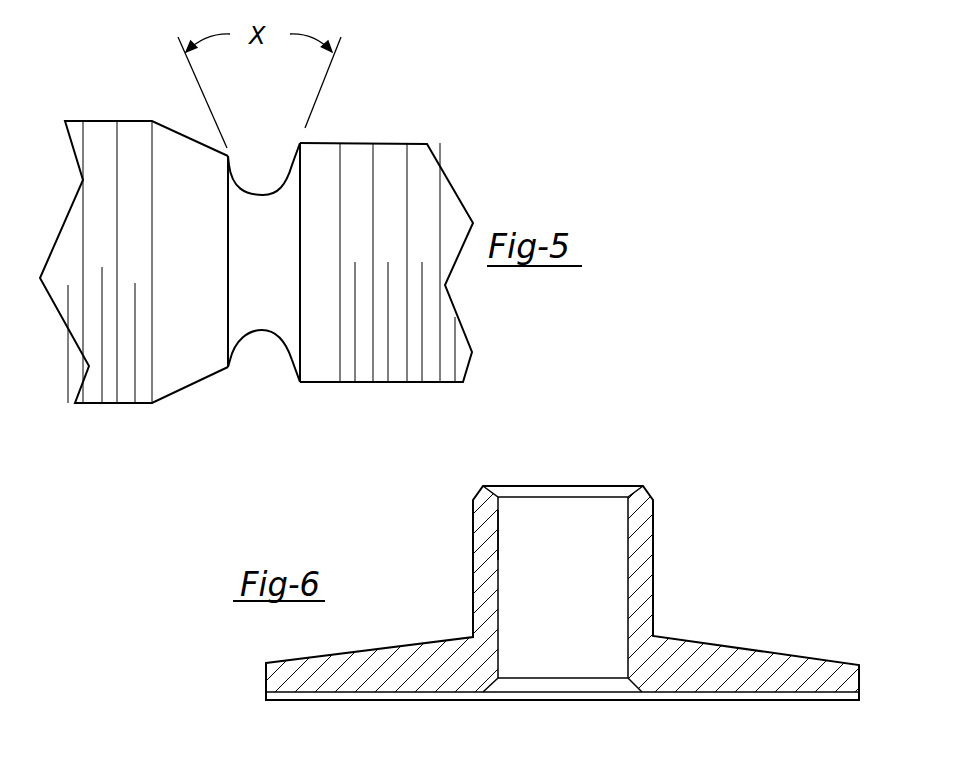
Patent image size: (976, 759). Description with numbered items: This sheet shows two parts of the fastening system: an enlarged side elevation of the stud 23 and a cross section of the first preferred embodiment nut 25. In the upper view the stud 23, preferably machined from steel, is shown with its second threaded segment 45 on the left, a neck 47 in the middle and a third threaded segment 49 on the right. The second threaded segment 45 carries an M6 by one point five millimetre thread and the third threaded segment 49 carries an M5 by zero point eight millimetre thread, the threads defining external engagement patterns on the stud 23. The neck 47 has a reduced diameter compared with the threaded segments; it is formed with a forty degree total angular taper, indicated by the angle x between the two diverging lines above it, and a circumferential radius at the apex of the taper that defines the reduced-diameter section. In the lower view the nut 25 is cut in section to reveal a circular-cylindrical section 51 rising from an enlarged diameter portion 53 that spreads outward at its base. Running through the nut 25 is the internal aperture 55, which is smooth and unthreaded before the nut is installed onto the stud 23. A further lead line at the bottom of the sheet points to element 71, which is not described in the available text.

In FIG. 5, the stud 23 is at (467, 167).
In FIG. 5, the second threaded segment 45 is at (106, 346).
In FIG. 5, the neck 47 is at (266, 297).
In FIG. 5, the third threaded segment 49 is at (422, 312).
In FIG. 6, the nut 25 is at (680, 498).
In FIG. 6, the circular-cylindrical section 51 is at (482, 570).
In FIG. 6, the internal aperture 55 is at (498, 533).
In FIG. 6, the enlarged diameter portion 53 is at (278, 687).
In FIG. 6, the bottom surface 71 is at (200, 758).